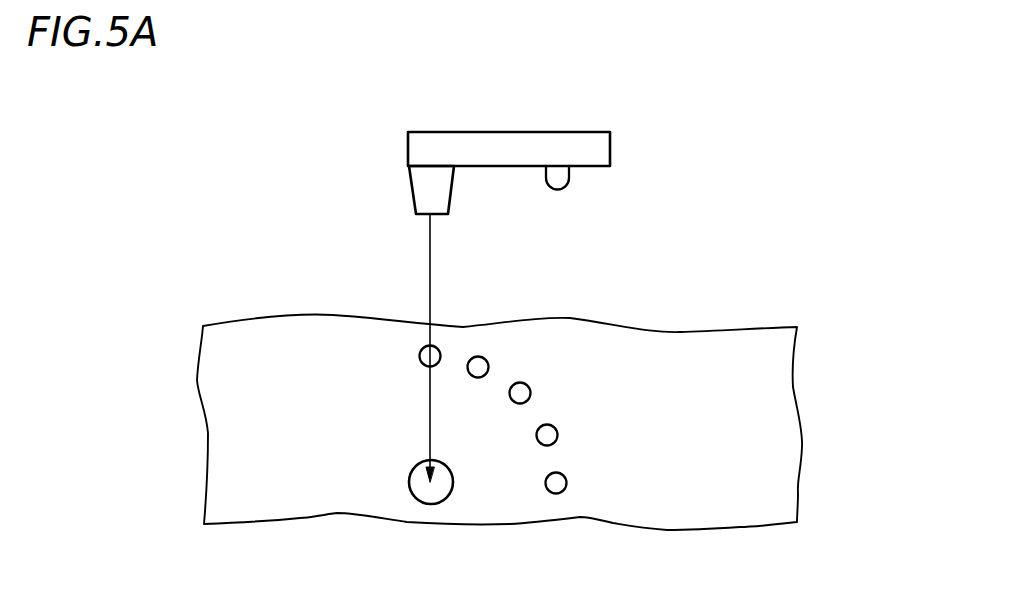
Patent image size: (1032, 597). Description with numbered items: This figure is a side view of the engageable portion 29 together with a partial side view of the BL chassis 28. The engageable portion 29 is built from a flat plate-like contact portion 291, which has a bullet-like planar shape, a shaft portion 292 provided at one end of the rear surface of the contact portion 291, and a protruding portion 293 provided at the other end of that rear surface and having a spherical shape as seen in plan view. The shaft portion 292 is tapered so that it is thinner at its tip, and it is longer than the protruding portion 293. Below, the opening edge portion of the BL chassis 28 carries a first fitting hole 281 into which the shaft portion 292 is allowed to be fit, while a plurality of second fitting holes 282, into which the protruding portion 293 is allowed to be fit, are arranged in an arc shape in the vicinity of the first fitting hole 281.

The BL chassis 28 is at (722, 345).
The first fitting hole 281 is at (427, 500).
The second fitting holes 282 is at (550, 433).
The engageable portion 29 is at (518, 153).
The contact portion 291 is at (500, 140).
The shaft portion 292 is at (422, 188).
The protruding portion 293 is at (560, 178).